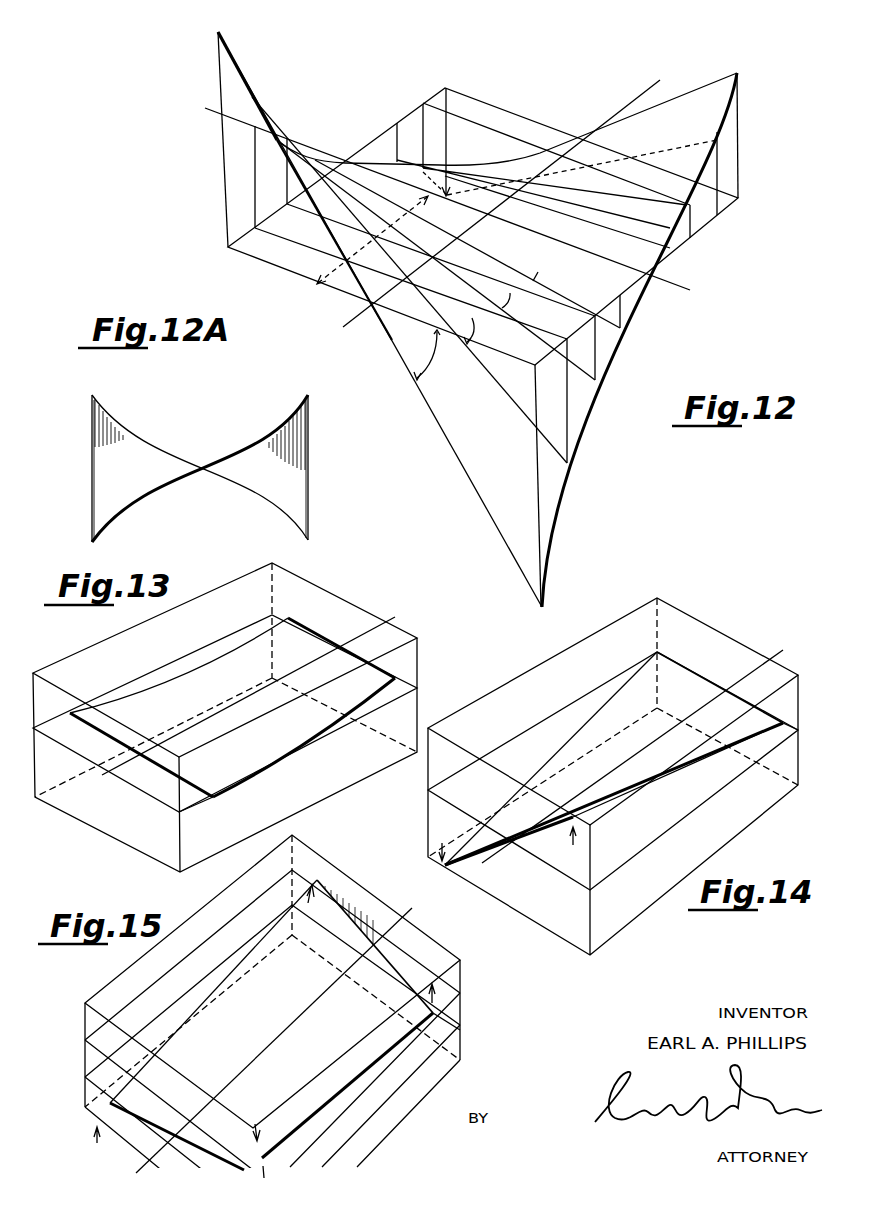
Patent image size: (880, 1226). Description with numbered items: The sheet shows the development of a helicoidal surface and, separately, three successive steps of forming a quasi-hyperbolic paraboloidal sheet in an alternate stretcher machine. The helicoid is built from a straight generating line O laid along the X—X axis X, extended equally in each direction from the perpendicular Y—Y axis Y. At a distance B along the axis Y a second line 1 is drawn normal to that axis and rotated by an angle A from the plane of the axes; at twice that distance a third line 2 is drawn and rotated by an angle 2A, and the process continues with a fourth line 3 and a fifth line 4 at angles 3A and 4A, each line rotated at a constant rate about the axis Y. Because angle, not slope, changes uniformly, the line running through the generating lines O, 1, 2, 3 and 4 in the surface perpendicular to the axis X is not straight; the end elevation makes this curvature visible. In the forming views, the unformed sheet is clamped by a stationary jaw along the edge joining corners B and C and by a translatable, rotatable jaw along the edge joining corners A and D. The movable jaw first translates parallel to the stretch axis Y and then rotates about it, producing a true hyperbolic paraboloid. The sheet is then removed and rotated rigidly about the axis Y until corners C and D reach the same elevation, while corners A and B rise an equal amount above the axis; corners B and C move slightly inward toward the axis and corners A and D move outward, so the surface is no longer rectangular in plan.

In FIG. 12, the X—X axis X is at (445, 198).
In FIG. 12, the Y—Y axis Y is at (498, 206).
In FIG. 13, the Y—Y axis Y is at (250, 694).
In FIG. 14, the Y—Y axis Y is at (631, 759).
In FIG. 15, the Y—Y axis Y is at (267, 1031).
In FIG. 12, the straight line 0—0 O is at (507, 184).
In FIG. 12, the second line 1— 1 is at (470, 240).
In FIG. 12, the third line 2— 2 is at (443, 259).
In FIG. 12, the generating line 3 is at (417, 281).
In FIG. 12, the generating line 4 is at (477, 318).
In FIG. 12, the angle A is at (542, 268).
In FIG. 13, the angle A is at (202, 806).
In FIG. 14, the angle A is at (614, 794).
In FIG. 15, the angle A is at (343, 1095).
In FIG. 12, the angle 2A is at (517, 302).
In FIG. 12, the angle 3A is at (478, 331).
In FIG. 12, the angle 4A is at (434, 355).
In FIG. 12, the distance B is at (372, 236).
In FIG. 13, the distance B is at (341, 641).
In FIG. 14, the distance B is at (720, 681).
In FIG. 15, the distance B is at (370, 935).
In FIG. 13, the corner C is at (311, 733).
In FIG. 14, the corner C is at (790, 722).
In FIG. 15, the corner C is at (444, 1007).
In FIG. 13, the corner D is at (170, 707).
In FIG. 14, the corner D is at (609, 771).
In FIG. 15, the corner D is at (199, 1025).